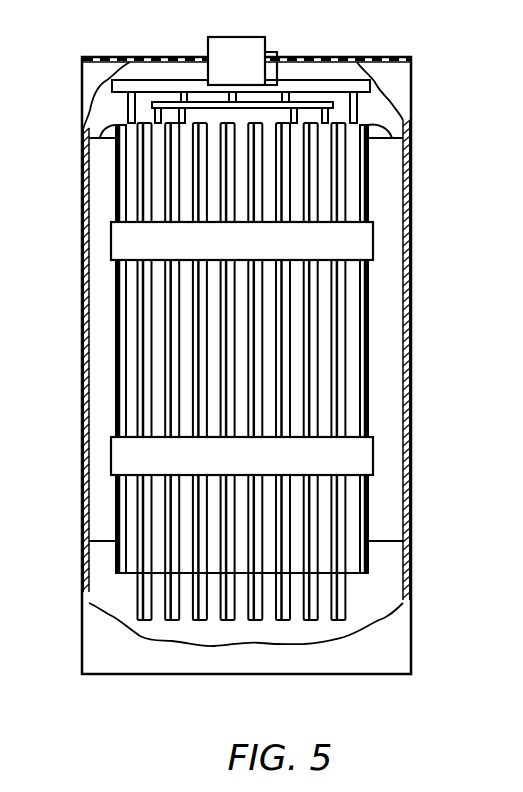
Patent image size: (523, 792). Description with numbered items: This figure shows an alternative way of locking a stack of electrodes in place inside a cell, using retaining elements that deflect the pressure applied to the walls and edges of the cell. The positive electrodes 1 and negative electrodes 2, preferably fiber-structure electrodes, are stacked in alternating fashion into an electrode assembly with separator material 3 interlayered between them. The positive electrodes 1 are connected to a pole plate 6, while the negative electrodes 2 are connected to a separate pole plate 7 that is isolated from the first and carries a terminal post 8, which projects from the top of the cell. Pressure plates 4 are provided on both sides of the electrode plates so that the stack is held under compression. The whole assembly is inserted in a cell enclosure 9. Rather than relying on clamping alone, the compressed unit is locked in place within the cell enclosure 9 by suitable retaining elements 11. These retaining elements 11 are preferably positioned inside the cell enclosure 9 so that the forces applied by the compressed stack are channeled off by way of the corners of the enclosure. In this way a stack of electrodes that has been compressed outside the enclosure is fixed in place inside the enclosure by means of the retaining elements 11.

The positive electrodes 1 is at (150, 585).
The negative electrodes 2 is at (126, 578).
The separator material 3 is at (145, 603).
The pressure plates 4 is at (117, 298).
The pole plate 6 is at (333, 105).
The pole plate 7 is at (371, 85).
The terminal post 8 is at (250, 37).
The cell enclosure 9 is at (411, 578).
The retaining elements 11 is at (407, 121).